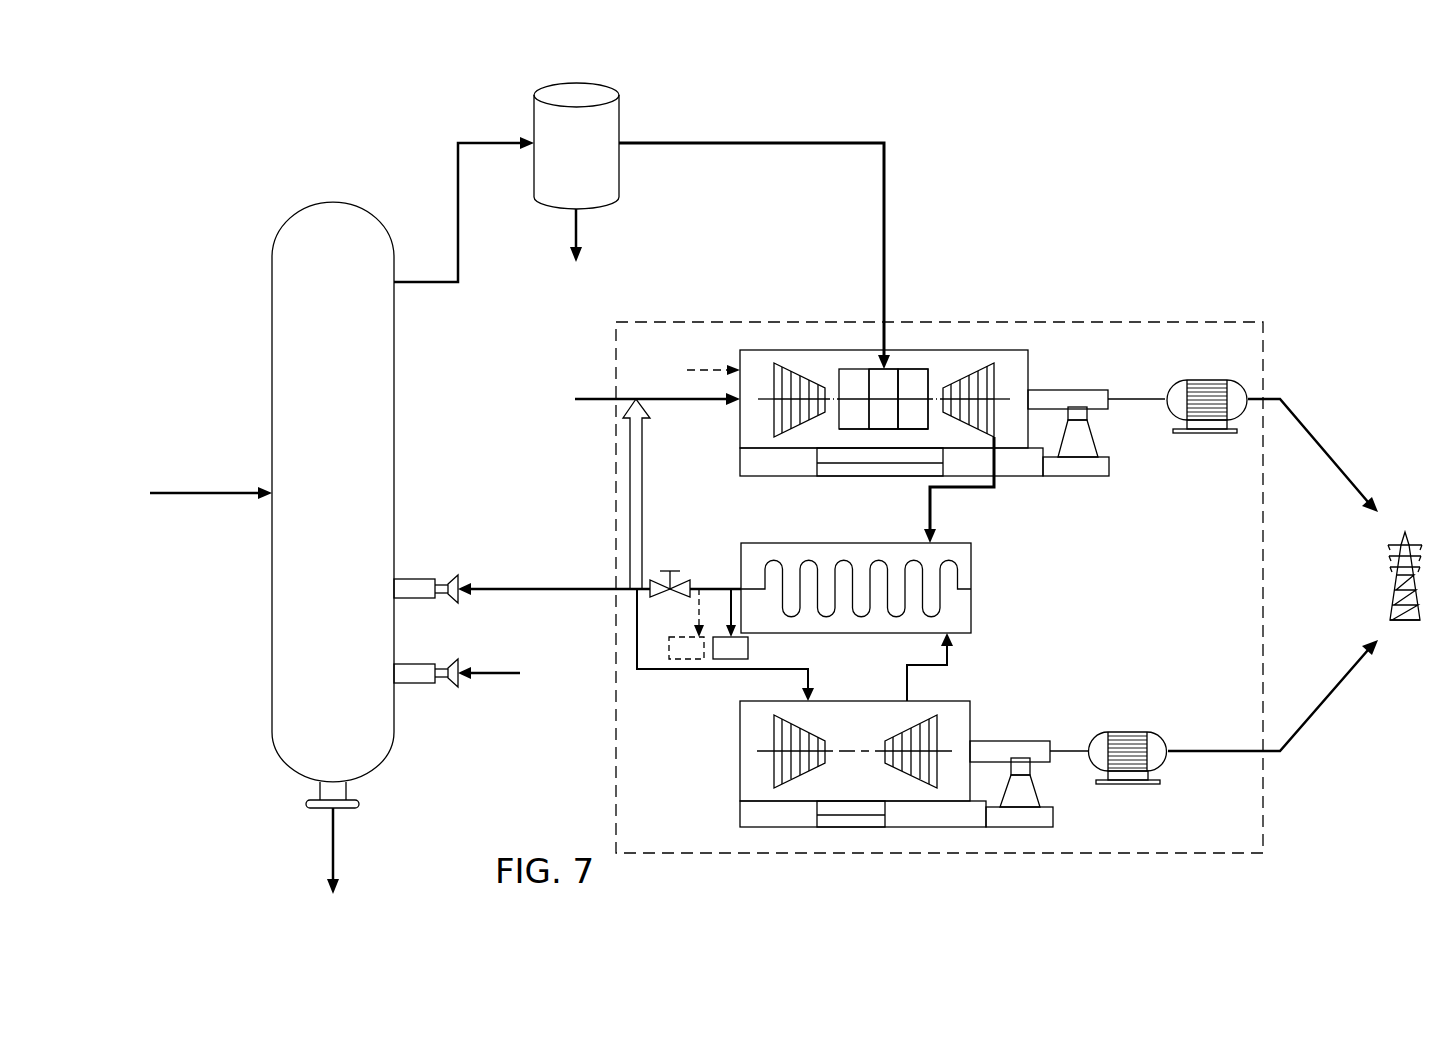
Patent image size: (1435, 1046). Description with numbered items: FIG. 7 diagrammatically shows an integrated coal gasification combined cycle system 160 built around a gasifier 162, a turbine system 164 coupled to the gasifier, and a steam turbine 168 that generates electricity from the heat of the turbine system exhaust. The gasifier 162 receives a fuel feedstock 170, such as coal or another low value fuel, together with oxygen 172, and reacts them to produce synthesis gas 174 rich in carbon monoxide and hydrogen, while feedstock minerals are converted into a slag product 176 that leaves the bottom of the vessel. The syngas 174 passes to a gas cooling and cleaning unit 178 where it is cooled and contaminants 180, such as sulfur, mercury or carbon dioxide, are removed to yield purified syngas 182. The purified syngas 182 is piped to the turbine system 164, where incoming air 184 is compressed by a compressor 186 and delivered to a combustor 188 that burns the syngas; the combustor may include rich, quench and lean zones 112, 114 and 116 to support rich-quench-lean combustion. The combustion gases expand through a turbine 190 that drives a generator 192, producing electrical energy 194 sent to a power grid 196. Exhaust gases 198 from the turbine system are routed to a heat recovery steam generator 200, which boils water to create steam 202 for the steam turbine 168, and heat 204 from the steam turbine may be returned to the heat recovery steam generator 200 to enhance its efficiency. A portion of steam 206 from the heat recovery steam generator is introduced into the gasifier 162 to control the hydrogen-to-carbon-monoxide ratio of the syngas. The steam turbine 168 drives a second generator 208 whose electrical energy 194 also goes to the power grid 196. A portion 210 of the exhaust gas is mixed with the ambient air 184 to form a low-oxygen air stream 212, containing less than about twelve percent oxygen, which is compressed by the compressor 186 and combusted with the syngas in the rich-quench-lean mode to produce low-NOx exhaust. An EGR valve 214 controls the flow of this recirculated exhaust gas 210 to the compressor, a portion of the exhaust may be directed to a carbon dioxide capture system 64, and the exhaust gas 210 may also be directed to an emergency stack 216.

The integrated coal gasification combined cycle system 160 is at (244, 94).
The gasifier 162 is at (272, 326).
The fuel feedstock 170 is at (205, 497).
The oxygen 172 is at (490, 667).
The synthesis gas 174 is at (458, 178).
The slag product 176 is at (336, 846).
The gas cooling and cleaning unit 178 is at (534, 112).
The contaminants 180 is at (577, 228).
The purified syngas 182 is at (790, 143).
The air 184 is at (701, 402).
The compressor 186 is at (778, 381).
The rich zone 112 is at (846, 386).
The quench zone 114 is at (877, 379).
The lean zone 116 is at (915, 378).
The combustor 188 is at (850, 430).
The turbine 190 is at (990, 378).
The turbine system 164 is at (1030, 383).
The generator 192 is at (1205, 380).
The electrical energy 194 is at (1326, 446).
The power grid 196 is at (1392, 610).
The exhaust gases 198 is at (932, 520).
The heat recovery steam generator 200 is at (971, 604).
The steam 202 is at (680, 672).
The heat 204 is at (950, 648).
The portion of steam 206 is at (553, 586).
The generator 208 is at (1130, 732).
The portion of exhaust gas 210 is at (630, 487).
The low-oxygen air stream 212 is at (706, 363).
The EGR valve 214 is at (688, 578).
The emergency stack 216 is at (668, 648).
The carbon dioxide capture system 64 is at (748, 648).
The steam turbine 168 is at (740, 770).